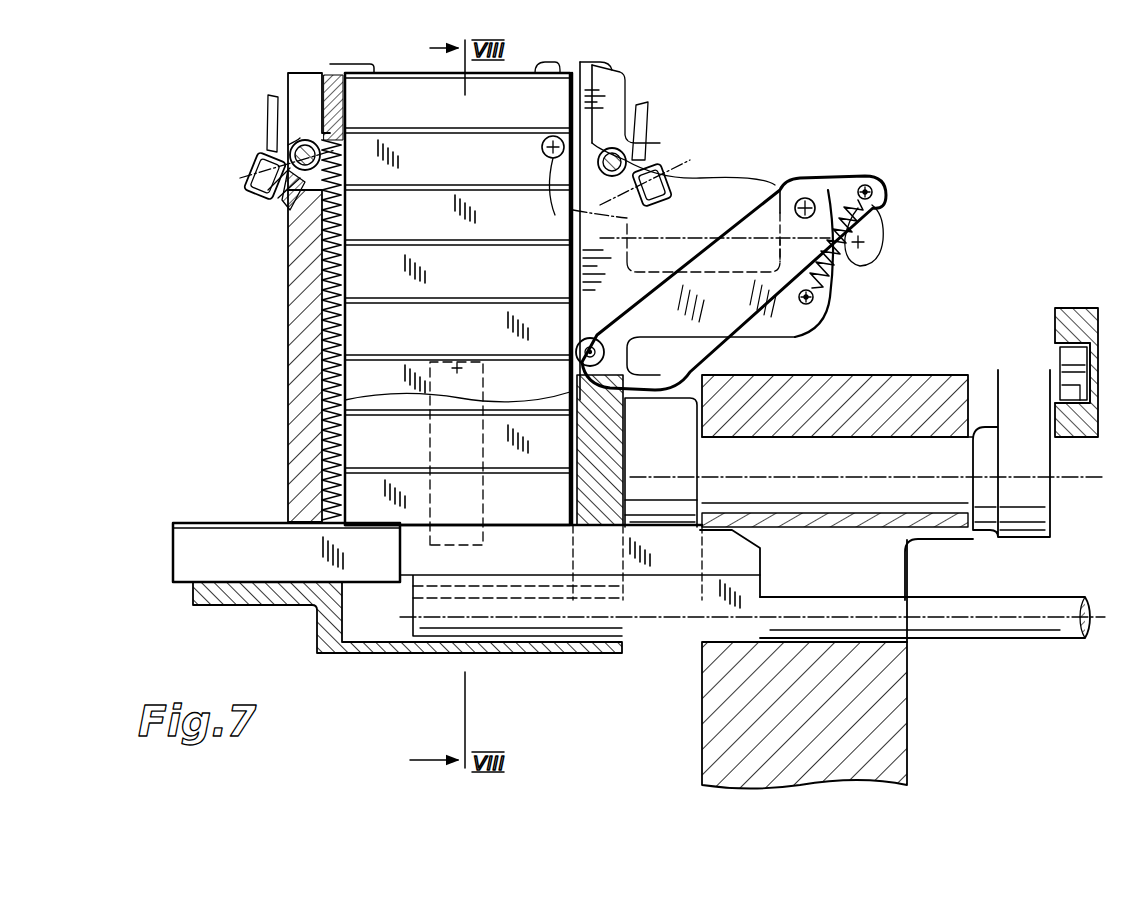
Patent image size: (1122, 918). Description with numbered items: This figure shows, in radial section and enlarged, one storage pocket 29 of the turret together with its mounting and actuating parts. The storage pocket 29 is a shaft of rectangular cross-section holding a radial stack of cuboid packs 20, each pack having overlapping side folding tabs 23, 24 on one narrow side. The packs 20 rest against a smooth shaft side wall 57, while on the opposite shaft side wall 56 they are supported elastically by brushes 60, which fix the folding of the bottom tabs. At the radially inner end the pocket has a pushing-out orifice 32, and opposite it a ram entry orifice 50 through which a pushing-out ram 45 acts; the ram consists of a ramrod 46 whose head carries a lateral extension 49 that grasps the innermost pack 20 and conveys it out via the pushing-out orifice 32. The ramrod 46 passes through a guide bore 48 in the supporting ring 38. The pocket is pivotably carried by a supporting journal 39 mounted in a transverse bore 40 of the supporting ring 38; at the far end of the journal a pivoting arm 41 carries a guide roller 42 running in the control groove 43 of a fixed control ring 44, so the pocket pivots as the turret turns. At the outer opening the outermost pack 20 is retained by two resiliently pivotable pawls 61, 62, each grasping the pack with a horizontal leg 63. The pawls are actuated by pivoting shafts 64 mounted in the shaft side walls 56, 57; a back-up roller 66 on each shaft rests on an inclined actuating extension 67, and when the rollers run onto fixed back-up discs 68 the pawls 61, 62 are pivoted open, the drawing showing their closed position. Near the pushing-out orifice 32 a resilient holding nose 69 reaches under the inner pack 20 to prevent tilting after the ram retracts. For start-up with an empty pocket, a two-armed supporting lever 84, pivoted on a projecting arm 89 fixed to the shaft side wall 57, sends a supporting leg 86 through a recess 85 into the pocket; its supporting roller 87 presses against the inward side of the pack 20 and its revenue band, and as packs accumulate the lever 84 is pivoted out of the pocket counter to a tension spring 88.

The pack 20 is at (421, 119).
The side folding tab 23 is at (387, 90).
The side folding tab 24 is at (356, 102).
The storage pocket 29 is at (282, 278).
The pushing-out orifice 32 is at (295, 523).
The supporting ring 38 is at (920, 685).
The supporting journal 39 is at (913, 460).
The transverse bore 40 is at (895, 433).
The pivoting arm 41 is at (1035, 495).
The guide roller 42 is at (1068, 360).
The control groove 43 is at (1070, 410).
The control ring 44 is at (1080, 322).
The pushing-out ram 45 is at (667, 640).
The ramrod 46 is at (1043, 603).
The guide bore 48 is at (885, 562).
The lateral extension 49 is at (662, 557).
The ram entry orifice 50 is at (596, 533).
The shaft side wall 56 is at (300, 338).
The shaft side wall 57 is at (600, 68).
The brushes 60 is at (320, 372).
The pawl 61 is at (324, 93).
The pawl 62 is at (596, 103).
The horizontal leg 63 is at (580, 63).
The pivoting shaft 64 is at (272, 148).
The back-up roller 66 is at (258, 200).
The actuating extension 67 is at (283, 207).
The back-up disc 68 is at (270, 118).
The holding nose 69 is at (458, 547).
The supporting lever 84 is at (725, 355).
The recess 85 is at (345, 400).
The supporting leg 86 is at (632, 372).
The supporting roller 87 is at (548, 138).
The tension spring 88 is at (880, 243).
The projecting arm 89 is at (822, 303).